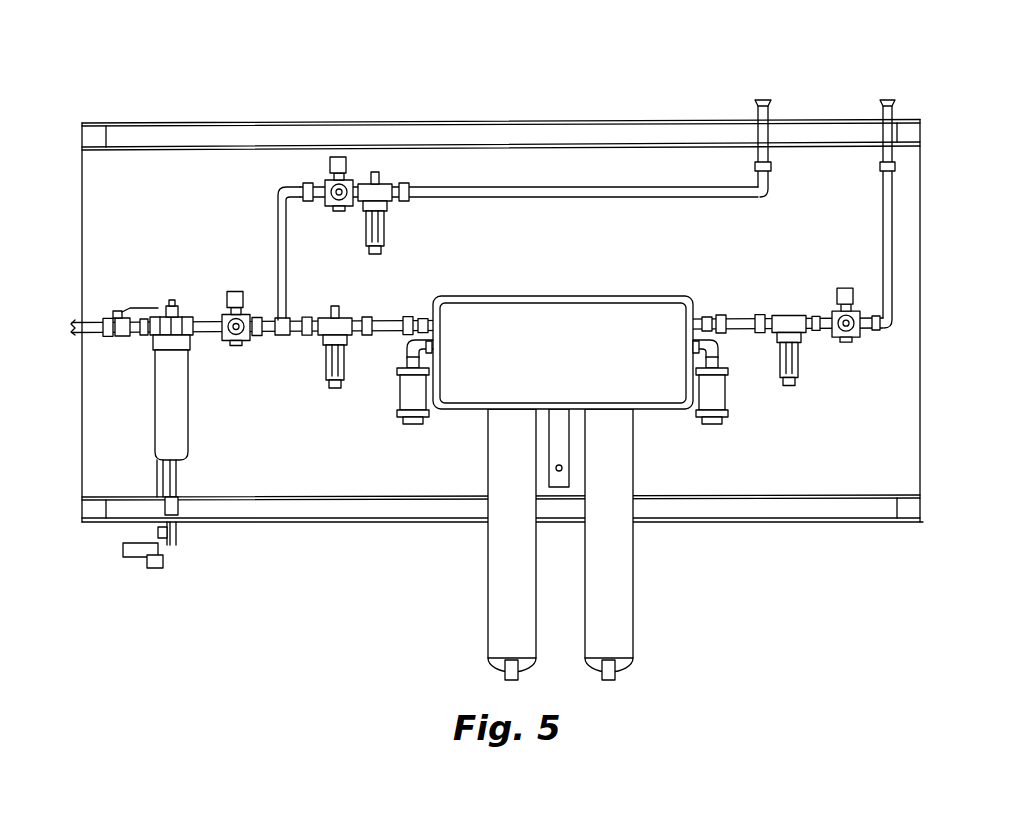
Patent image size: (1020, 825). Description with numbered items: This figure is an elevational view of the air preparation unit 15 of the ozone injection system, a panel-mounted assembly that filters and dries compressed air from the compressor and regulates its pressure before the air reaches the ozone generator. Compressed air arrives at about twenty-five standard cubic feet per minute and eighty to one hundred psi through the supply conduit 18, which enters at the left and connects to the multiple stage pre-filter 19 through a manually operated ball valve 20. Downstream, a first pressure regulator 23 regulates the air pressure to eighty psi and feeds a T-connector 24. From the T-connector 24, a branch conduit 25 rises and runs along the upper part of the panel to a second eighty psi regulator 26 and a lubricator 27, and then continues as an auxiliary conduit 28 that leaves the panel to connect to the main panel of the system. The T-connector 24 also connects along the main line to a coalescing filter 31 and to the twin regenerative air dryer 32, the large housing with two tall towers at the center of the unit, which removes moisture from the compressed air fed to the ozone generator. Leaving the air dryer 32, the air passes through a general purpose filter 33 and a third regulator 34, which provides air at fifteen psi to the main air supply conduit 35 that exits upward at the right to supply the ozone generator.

The air preparation unit 15 is at (513, 114).
The supply conduit 18 is at (72, 321).
The multiple stage pre-filter 19 is at (119, 337).
The manually operated ball valve 20 is at (160, 438).
The first pressure regulator 23 is at (232, 341).
The T-connector 24 is at (285, 340).
The branch conduit 25 is at (283, 253).
The second regulator 26 is at (334, 205).
The lubricator 27 is at (382, 230).
The auxiliary conduit 28 is at (757, 108).
The coalescing filter 31 is at (330, 378).
The twin regenerative air dryer 32 is at (557, 319).
The general purpose filter 33 is at (797, 373).
The third regulator 34 is at (842, 339).
The main air supply conduit 35 is at (882, 108).